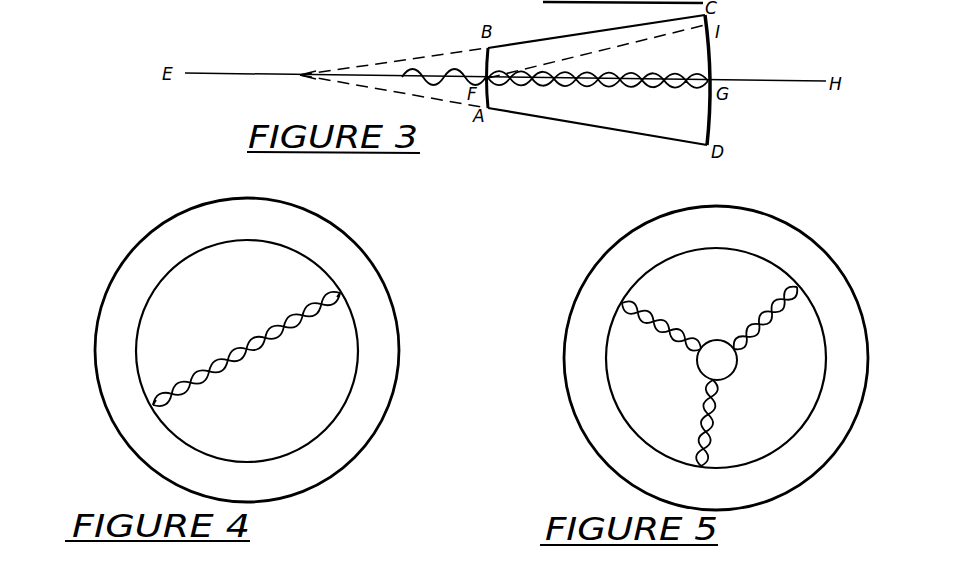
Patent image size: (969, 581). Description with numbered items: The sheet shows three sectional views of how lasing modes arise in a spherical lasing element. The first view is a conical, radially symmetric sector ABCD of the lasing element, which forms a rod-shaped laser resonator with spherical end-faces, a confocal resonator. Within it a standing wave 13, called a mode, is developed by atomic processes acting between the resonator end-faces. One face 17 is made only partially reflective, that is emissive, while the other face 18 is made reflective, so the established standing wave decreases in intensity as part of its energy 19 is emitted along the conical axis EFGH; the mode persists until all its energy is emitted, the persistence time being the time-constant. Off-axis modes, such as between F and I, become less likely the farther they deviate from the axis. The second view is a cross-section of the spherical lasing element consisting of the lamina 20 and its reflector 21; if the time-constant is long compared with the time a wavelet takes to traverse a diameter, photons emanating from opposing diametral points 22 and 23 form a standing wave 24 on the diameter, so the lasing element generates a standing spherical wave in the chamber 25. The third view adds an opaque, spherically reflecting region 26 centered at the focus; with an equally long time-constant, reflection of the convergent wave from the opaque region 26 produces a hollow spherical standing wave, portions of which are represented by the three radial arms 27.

In FIG. 3, the standing wave 13 is at (613, 89).
In FIG. 3, the partially reflective face 17 is at (491, 99).
In FIG. 3, the reflective face 18 is at (714, 119).
In FIG. 3, the emitted energy 19 is at (422, 69).
In FIG. 4, the lamina 20 is at (330, 242).
In FIG. 4, the reflector 21 is at (362, 252).
In FIG. 4, the diametral point 22 is at (155, 412).
In FIG. 4, the diametral point 23 is at (341, 297).
In FIG. 4, the standing wave 24 is at (253, 359).
In FIG. 4, the chamber 25 is at (247, 351).
In FIG. 5, the opaque spherically reflecting region 26 is at (734, 367).
In FIG. 5, the spherical standing wave portions 27 is at (778, 318).